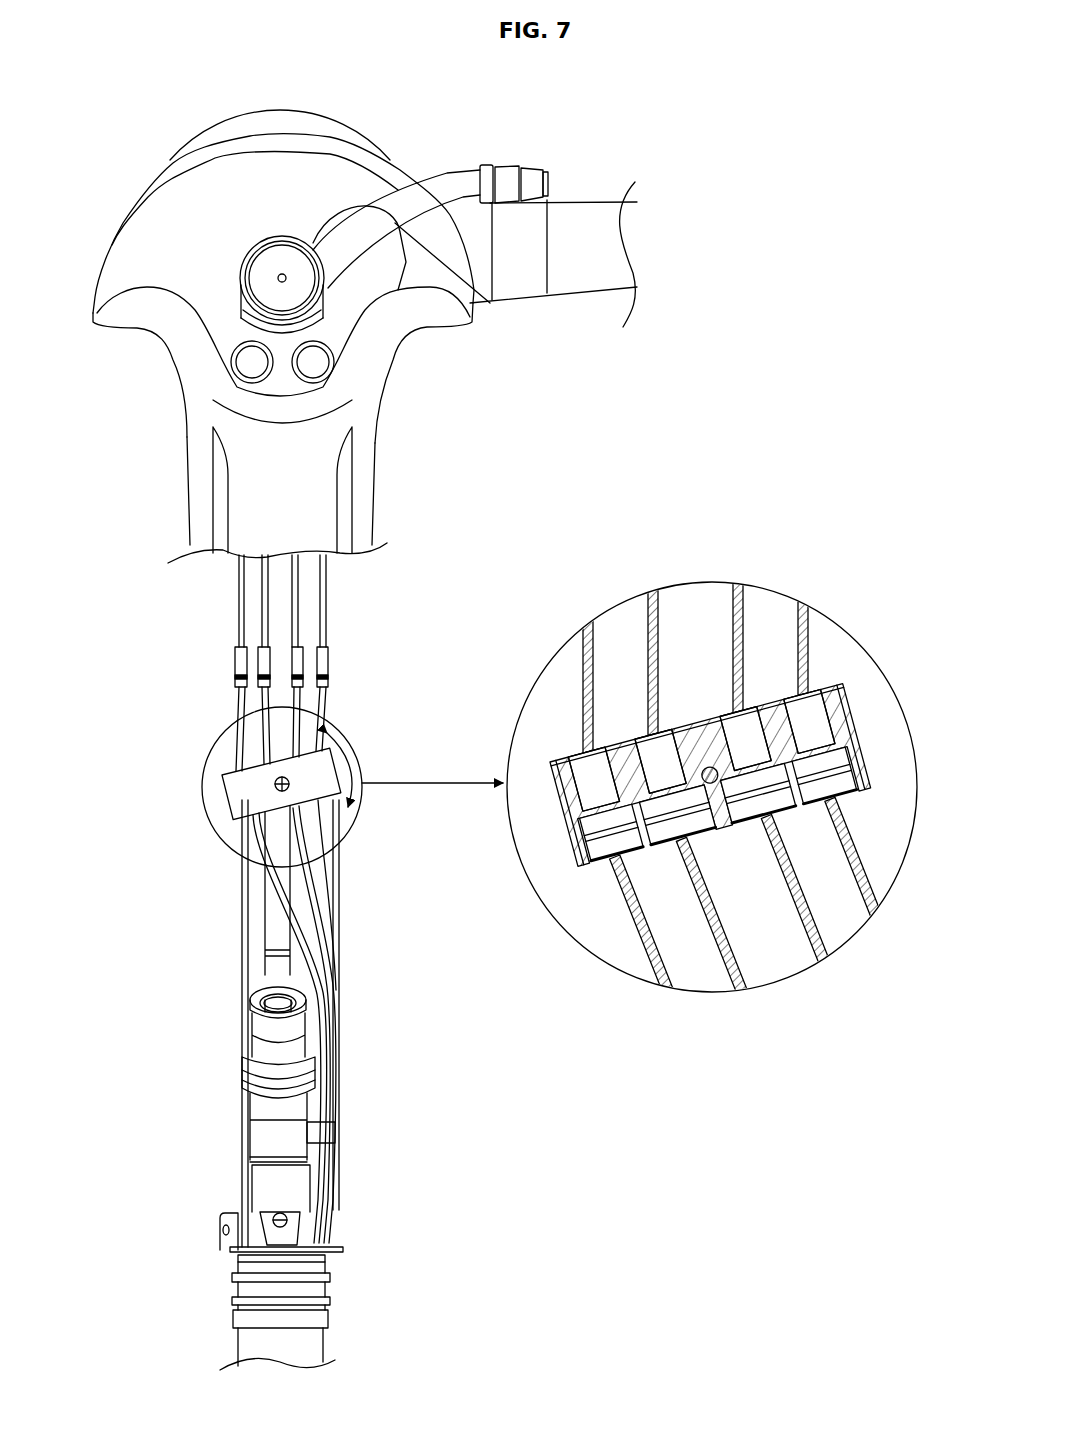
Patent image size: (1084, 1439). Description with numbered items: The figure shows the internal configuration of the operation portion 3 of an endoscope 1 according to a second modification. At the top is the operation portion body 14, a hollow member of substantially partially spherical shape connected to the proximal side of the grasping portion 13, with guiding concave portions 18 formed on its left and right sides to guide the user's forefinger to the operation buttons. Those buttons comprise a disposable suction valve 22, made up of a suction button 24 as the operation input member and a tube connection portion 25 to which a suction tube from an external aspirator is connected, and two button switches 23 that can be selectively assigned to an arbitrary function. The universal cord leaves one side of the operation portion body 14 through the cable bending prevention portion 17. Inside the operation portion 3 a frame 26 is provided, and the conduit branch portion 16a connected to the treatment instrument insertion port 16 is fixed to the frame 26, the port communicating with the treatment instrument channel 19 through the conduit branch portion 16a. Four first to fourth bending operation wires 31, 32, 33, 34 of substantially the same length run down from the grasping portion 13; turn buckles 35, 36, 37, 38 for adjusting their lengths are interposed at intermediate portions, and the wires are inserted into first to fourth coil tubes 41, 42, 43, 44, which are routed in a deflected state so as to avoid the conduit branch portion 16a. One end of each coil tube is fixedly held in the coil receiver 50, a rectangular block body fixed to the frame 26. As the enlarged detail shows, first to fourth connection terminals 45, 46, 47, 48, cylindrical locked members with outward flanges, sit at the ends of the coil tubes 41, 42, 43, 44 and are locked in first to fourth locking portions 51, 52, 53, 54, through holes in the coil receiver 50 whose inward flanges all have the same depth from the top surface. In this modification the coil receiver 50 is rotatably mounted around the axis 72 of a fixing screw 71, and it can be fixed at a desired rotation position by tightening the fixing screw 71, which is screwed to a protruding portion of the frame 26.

The endoscope 1 is at (150, 158).
The operation portion 3 is at (441, 526).
The grasping portion 13 is at (380, 458).
The operation portion body 14 is at (125, 225).
The treatment instrument insertion port 16 is at (248, 1030).
The conduit branch portion 16a is at (244, 1075).
The cable bending prevention portion 17 is at (584, 198).
The guiding concave portions 18 is at (136, 333).
The treatment instrument channel 19 is at (250, 1252).
The suction valve 22 is at (291, 238).
The button switches 23 is at (235, 362).
The suction button 24 is at (270, 238).
The tube connection portion 25 is at (440, 172).
The frame 26 is at (244, 1135).
The first bending operation wire 31 is at (238, 630).
The second bending operation wire 32 is at (262, 580).
The third bending operation wire 33 is at (298, 580).
The fourth bending operation wire 34 is at (326, 628).
The turn buckle 35 is at (235, 682).
The turn buckle 36 is at (257, 657).
The turn buckle 37 is at (305, 657).
The turn buckle 38 is at (328, 682).
The first coil tube 41 is at (268, 910).
The second coil tube 42 is at (282, 875).
The third coil tube 43 is at (318, 868).
The fourth coil tube 44 is at (338, 912).
The first connection terminal 45 is at (585, 826).
The second connection terminal 46 is at (562, 768).
The third connection terminal 47 is at (755, 750).
The fourth connection terminal 48 is at (847, 758).
The coil receiver 50 is at (224, 785).
The first locking portion 51 is at (607, 737).
The second locking portion 52 is at (660, 847).
The third locking portion 53 is at (748, 833).
The fourth locking portion 54 is at (803, 808).
The fixing screw 71 is at (274, 787).
The axis 72 is at (718, 830).